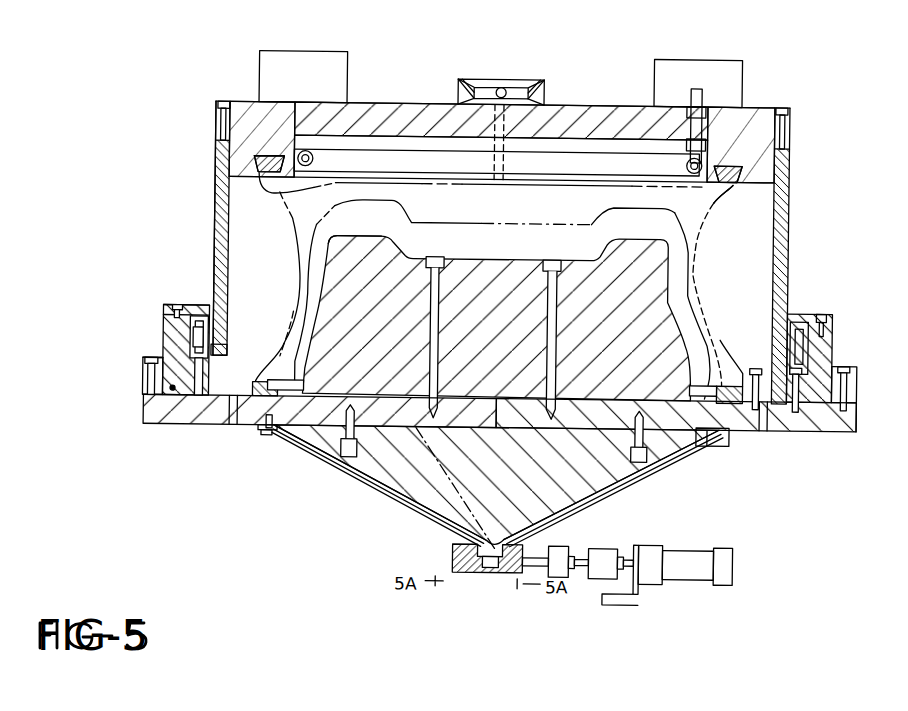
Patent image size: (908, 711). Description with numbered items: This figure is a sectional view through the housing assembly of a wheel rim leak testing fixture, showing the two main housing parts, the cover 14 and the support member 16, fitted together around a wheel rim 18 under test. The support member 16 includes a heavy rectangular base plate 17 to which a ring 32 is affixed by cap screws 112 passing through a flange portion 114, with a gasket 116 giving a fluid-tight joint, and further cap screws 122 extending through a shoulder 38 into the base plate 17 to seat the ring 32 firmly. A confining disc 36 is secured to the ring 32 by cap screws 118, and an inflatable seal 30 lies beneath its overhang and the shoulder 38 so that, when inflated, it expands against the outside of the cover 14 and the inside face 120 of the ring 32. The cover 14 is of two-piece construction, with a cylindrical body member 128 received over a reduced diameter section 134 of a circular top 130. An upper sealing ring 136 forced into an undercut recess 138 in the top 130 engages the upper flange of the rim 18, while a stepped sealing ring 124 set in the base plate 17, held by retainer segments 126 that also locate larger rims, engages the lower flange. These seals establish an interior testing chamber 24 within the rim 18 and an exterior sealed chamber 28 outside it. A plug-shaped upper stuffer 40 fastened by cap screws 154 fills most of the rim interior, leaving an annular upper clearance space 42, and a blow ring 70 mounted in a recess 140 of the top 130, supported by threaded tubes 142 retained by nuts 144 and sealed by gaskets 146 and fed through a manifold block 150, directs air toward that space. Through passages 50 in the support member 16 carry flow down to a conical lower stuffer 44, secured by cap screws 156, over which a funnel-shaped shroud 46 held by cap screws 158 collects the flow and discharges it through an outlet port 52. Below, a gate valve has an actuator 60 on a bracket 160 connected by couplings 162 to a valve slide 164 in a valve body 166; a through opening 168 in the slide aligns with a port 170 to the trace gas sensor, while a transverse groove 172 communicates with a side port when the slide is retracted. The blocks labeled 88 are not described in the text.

The cover 14 is at (210, 170).
The support member 16 is at (858, 382).
The base plate 17 is at (143, 415).
The wheel rim 18 is at (284, 308).
The interior testing chamber 24 is at (385, 230).
The exterior sealed chamber 28 is at (749, 228).
The inflatable seal 30 is at (205, 319).
The ring 32 is at (161, 330).
The confining disc 36 is at (186, 308).
The shoulder 38 is at (253, 386).
The upper stuffer member 40 is at (392, 343).
The upper clearance space 42 is at (320, 276).
The lower stuffer member 44 is at (510, 481).
The funnel-shaped shroud 46 is at (350, 468).
The through passages 50 is at (706, 440).
The outlet port 52 is at (468, 573).
The actuator 60 is at (728, 522).
The blow ring 70 is at (549, 151).
The block 88 is at (278, 58).
The cap screws 112 is at (145, 364).
The flange portion 114 is at (150, 361).
The gasket 116 is at (173, 393).
The cap screws 118 is at (175, 308).
The inside face 120 is at (198, 332).
The cap screws 122 is at (782, 378).
The stepped sealing ring 124 is at (258, 384).
The retainer segments 126 is at (740, 383).
The cylindrical body member 128 is at (212, 208).
The circular top 130 is at (412, 72).
The reduced diameter section 134 is at (220, 130).
The upper sealing ring 136 is at (262, 158).
The undercut recess 138 is at (278, 158).
The recess 140 is at (585, 140).
The threaded tubes 142 is at (690, 88).
The nuts 144 is at (705, 108).
The gaskets 146 is at (738, 108).
The manifold block 150 is at (493, 48).
The cap screws 154 is at (440, 318).
The cap screws 156 is at (357, 436).
The cap screws 158 is at (267, 438).
The bracket 160 is at (644, 597).
The couplings 162 is at (606, 547).
The valve slide 164 is at (537, 568).
The valve body 166 is at (454, 549).
The through opening 168 is at (494, 575).
The port 170 is at (501, 574).
The transverse groove 172 is at (537, 552).